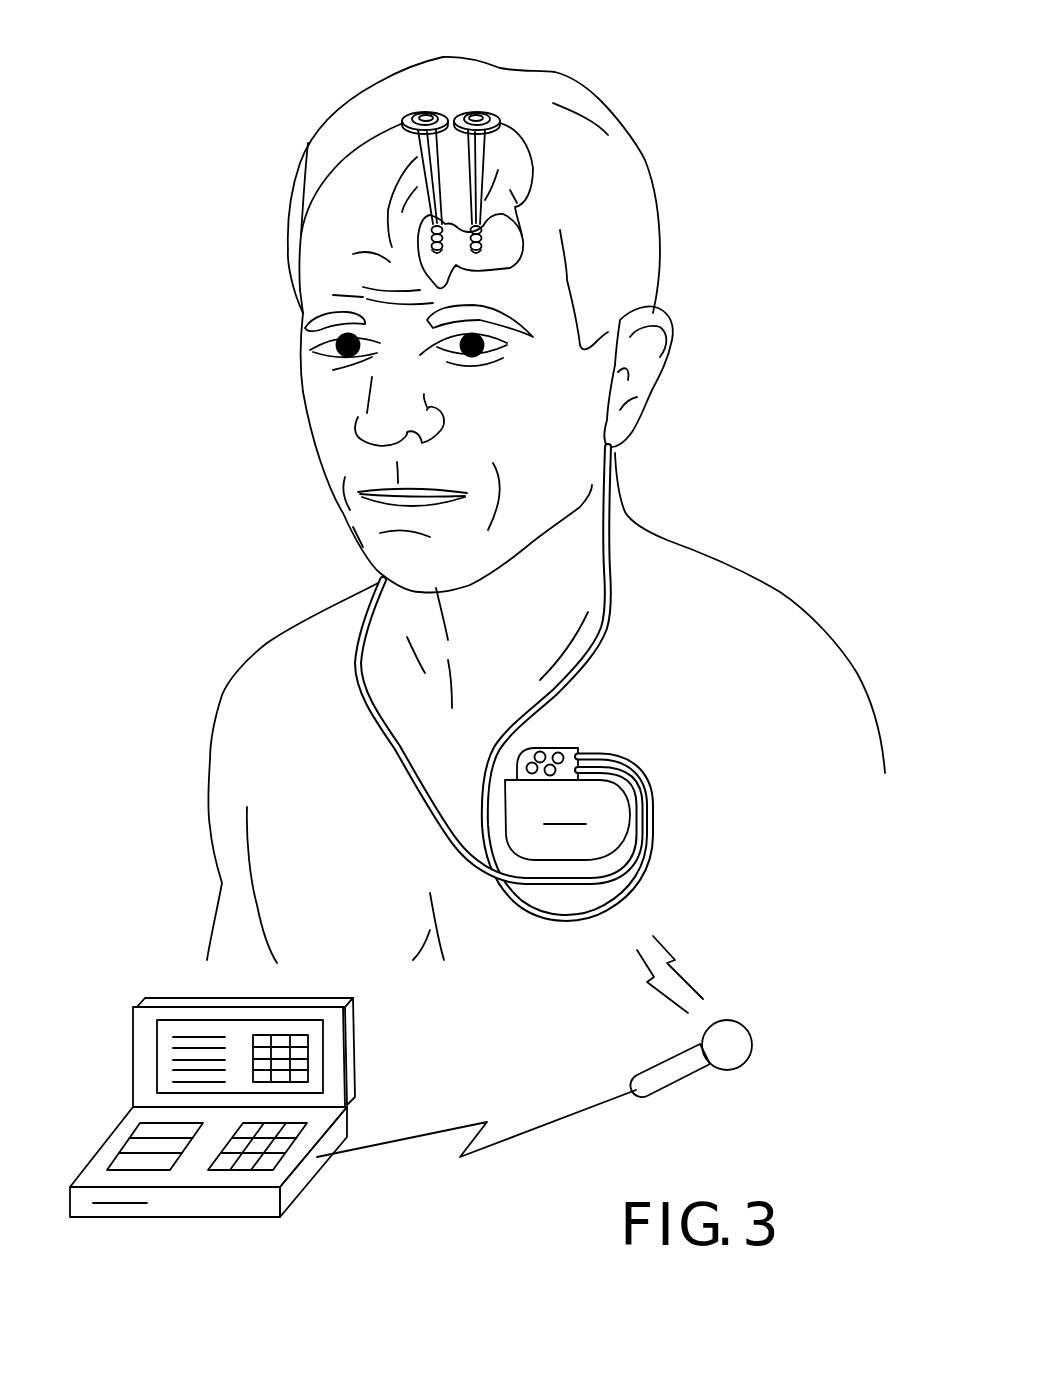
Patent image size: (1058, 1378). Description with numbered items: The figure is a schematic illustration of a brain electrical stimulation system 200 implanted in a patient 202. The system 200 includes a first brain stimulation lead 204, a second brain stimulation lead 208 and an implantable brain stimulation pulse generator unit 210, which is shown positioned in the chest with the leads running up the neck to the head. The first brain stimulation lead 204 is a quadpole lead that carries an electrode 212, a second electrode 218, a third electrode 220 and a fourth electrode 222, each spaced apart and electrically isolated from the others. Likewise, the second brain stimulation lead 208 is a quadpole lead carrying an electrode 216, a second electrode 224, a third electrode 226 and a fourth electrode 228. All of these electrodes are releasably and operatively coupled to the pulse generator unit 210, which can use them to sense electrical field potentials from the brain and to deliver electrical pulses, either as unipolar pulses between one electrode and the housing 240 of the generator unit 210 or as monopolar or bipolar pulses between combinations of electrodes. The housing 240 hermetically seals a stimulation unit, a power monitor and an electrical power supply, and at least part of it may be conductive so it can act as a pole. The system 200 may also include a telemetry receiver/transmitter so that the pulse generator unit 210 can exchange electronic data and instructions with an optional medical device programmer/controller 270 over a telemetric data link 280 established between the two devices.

The brain electrical stimulation system 200 is at (632, 744).
The patient 202 is at (546, 510).
The first brain stimulation lead 204 is at (616, 636).
The second brain stimulation lead 208 is at (632, 890).
The implantable brain stimulation pulse generator unit 210 is at (616, 823).
The electrode 212 is at (487, 236).
The electrode 216 is at (450, 283).
The second electrode 218 is at (485, 243).
The third electrode 220 is at (490, 240).
The fourth electrode 222 is at (483, 113).
The second electrode 224 is at (432, 271).
The third electrode 226 is at (428, 235).
The fourth electrode 228 is at (413, 118).
The housing 240 is at (615, 818).
The medical device programmer/controller 270 is at (293, 1223).
The telemetric data link 280 is at (707, 973).